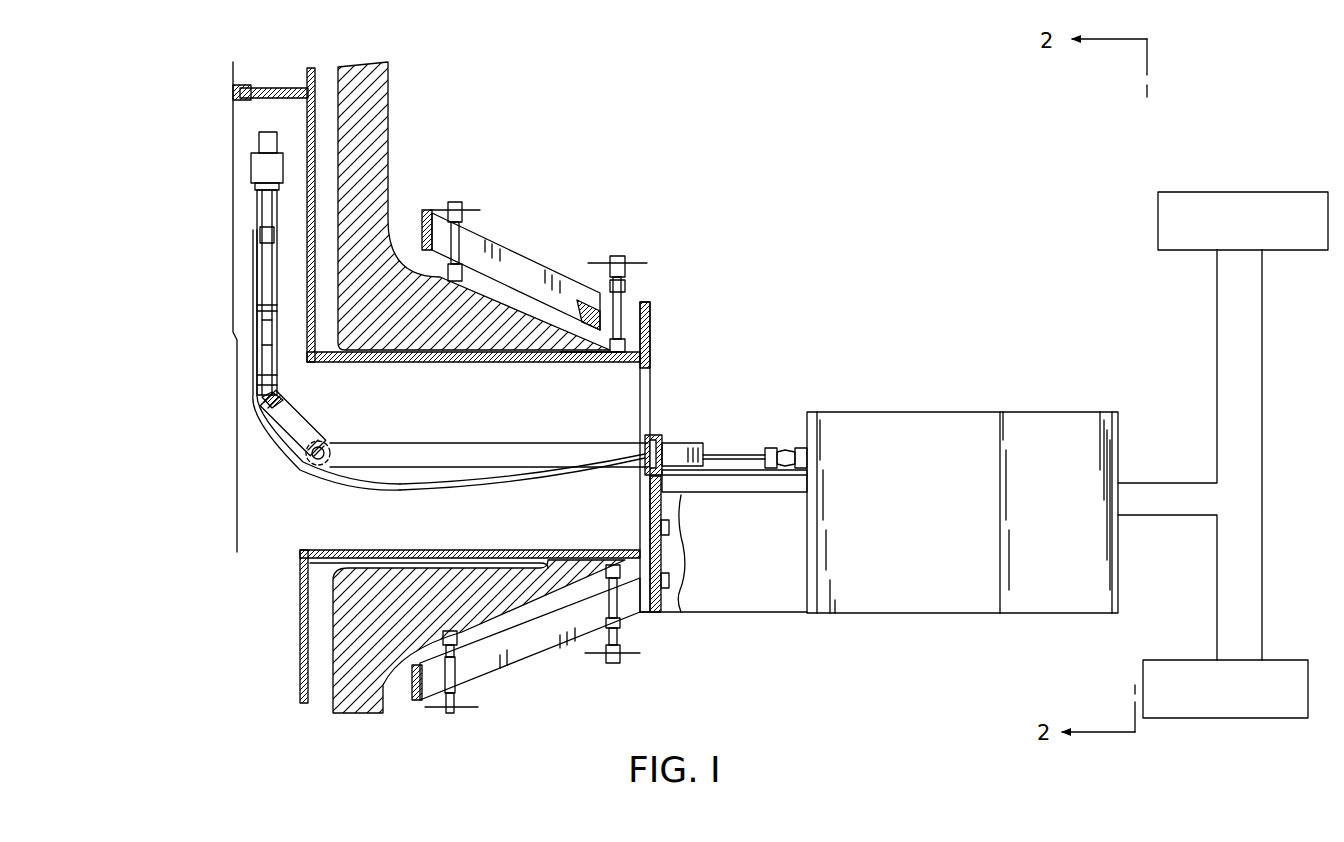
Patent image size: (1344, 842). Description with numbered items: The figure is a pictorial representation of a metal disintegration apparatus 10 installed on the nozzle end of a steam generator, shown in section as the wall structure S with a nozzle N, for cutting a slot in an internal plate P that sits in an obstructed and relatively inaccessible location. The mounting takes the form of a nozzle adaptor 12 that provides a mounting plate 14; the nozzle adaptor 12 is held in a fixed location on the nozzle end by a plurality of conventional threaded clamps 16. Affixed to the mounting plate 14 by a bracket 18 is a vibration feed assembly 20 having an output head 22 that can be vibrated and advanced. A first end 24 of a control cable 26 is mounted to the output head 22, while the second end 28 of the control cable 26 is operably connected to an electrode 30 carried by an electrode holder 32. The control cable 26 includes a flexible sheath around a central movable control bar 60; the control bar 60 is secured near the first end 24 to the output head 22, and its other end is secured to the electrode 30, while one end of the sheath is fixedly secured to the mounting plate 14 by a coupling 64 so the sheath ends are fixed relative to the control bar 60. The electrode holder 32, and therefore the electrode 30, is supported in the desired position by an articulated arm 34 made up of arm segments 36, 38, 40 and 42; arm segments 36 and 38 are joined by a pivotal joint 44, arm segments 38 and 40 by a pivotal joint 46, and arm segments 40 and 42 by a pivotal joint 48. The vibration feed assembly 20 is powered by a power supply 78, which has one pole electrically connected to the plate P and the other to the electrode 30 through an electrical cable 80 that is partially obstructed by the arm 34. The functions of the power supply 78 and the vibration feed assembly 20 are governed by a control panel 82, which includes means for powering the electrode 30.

The plate P is at (278, 88).
The structure / wall S is at (400, 126).
The nozzle plate N is at (573, 356).
The metal disintegration apparatus 10 is at (844, 476).
The nozzle adaptor 12 is at (497, 249).
The mounting plate 14 is at (652, 384).
The threaded clamps 16 is at (458, 203).
The bracket 18 is at (655, 614).
The vibration feed assembly 20 is at (918, 420).
The output head 22 is at (788, 447).
The first end 24 is at (715, 455).
The control cable 26 is at (389, 492).
The second end 28 is at (257, 208).
The electrode 30 is at (258, 142).
The electrode holder 32 is at (251, 171).
The articulated arm 34 is at (454, 423).
The arm segment 36 is at (371, 458).
The arm segment 38 is at (300, 428).
The arm segment 40 is at (253, 373).
The arm segment 42 is at (257, 256).
The pivotal joint 44 is at (329, 448).
The pivotal joint 46 is at (283, 397).
The pivotal joint 48 is at (268, 334).
The control bar 60 is at (748, 455).
The coupling 64 is at (645, 458).
The power supply 78 is at (1262, 660).
The electrical cable 80 is at (740, 478).
The control panel 82 is at (1268, 192).